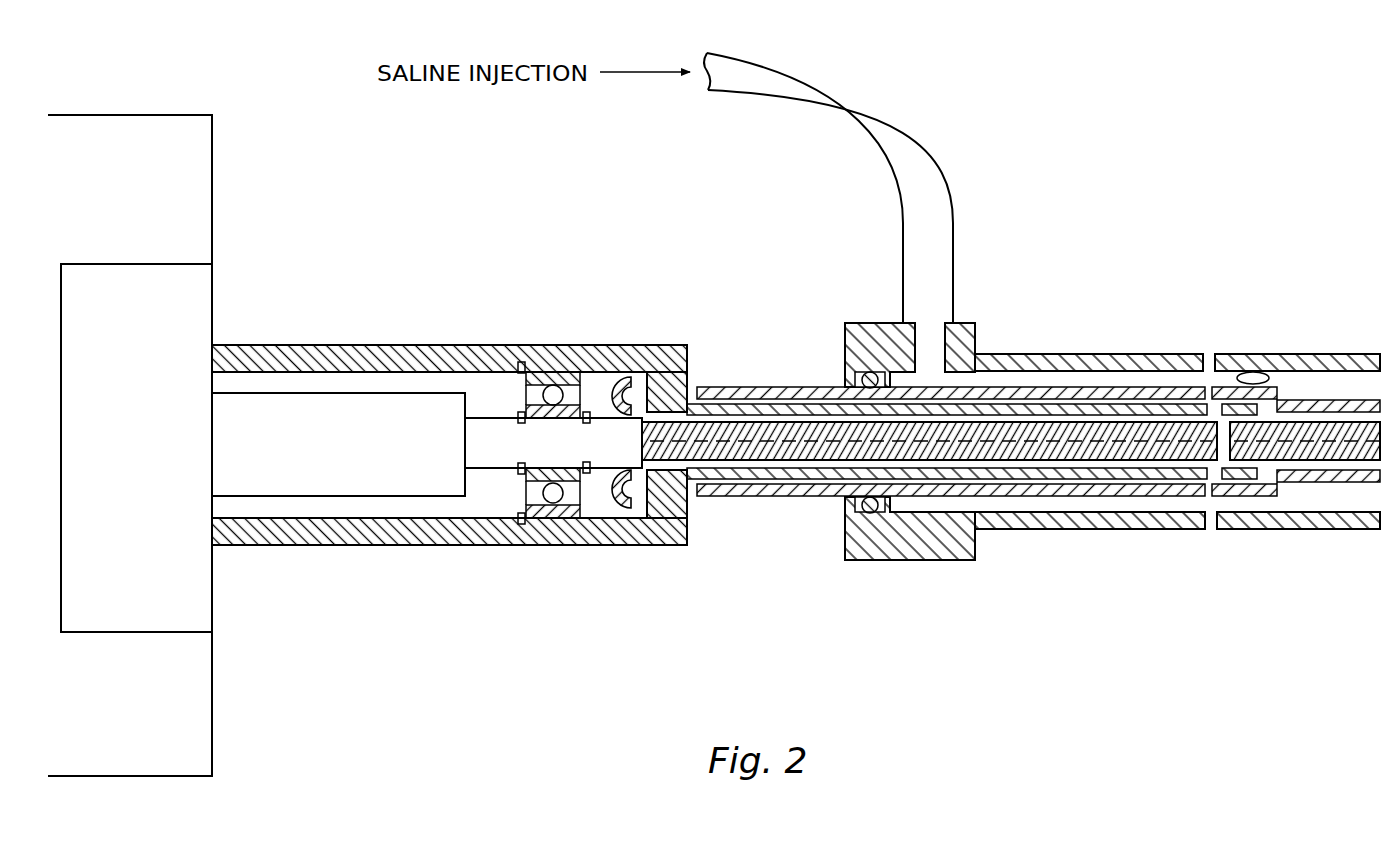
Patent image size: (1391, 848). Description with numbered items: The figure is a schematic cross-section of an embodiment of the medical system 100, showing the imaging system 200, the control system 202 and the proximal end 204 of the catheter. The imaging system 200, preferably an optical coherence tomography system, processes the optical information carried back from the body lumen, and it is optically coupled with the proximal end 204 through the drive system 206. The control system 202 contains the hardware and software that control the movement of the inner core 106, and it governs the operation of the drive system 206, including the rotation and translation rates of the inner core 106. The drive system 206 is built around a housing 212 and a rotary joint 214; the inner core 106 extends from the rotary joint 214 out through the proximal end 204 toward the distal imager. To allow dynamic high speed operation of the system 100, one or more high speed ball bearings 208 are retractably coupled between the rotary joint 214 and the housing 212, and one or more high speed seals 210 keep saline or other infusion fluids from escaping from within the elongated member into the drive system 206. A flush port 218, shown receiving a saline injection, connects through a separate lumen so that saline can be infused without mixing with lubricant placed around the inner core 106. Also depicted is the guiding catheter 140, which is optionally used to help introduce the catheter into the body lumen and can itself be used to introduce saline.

The medical system 100 is at (940, 640).
The inner core 106 is at (780, 443).
The guiding catheter 140 is at (1032, 353).
The imaging system 200 is at (130, 445).
The control system 202 is at (136, 448).
The proximal end 204 is at (819, 534).
The drive system 206 is at (462, 547).
The high speed ball bearings 208 is at (612, 380).
The high speed seals 210 is at (620, 507).
The housing 212 is at (305, 533).
The rotary joint 214 is at (427, 444).
The flush port 218 is at (823, 72).